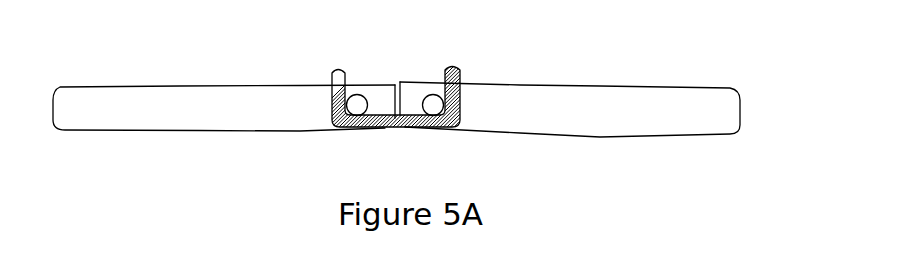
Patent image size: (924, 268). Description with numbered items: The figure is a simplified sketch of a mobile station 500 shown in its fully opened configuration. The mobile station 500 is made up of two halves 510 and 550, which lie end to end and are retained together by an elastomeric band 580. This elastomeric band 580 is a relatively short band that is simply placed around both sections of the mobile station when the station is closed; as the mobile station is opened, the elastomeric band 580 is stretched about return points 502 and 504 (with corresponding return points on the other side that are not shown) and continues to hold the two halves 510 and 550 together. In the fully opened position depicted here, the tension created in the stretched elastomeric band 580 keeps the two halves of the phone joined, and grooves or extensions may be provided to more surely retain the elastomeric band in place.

The mobile station 500 is at (814, 108).
The half of mobile station 550 is at (173, 85).
The half of mobile station 510 is at (575, 83).
The elastomeric band 580 is at (460, 75).
The return point 504 is at (364, 96).
The return point 502 is at (430, 95).